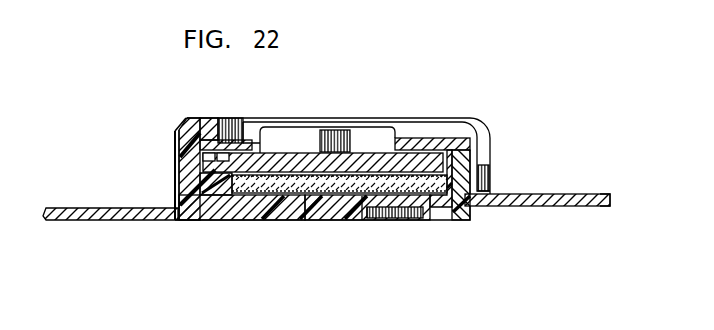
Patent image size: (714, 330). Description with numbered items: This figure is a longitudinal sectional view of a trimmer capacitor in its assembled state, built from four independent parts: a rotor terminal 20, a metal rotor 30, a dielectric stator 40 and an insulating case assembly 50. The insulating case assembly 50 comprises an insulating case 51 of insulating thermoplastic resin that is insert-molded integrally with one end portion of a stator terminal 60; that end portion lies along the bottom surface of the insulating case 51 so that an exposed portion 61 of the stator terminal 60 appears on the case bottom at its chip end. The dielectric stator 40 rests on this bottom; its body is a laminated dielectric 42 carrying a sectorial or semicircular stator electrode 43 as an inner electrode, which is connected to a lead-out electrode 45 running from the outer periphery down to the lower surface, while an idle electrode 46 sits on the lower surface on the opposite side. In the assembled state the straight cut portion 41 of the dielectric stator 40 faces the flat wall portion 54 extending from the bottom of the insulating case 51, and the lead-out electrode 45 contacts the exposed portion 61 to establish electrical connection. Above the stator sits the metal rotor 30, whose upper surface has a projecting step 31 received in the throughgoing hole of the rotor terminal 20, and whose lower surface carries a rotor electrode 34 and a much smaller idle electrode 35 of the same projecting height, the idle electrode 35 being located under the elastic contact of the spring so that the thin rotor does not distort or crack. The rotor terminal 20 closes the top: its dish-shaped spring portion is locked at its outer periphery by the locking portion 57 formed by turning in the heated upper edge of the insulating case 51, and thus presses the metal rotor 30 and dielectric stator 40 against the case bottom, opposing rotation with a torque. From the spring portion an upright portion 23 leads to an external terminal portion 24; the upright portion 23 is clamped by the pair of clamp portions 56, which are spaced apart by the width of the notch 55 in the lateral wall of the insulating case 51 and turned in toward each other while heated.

The rotor terminal 20 is at (531, 194).
The upright portion 23 is at (473, 171).
The terminal portion 24 is at (581, 194).
The metal rotor 30 is at (345, 137).
The projecting step 31 is at (302, 120).
The rotor electrode 34 is at (384, 152).
The idle electrode 35 is at (232, 120).
The dielectric stator 40 is at (330, 204).
The cut portion 41 is at (205, 163).
The dielectric 42 is at (300, 195).
The stator electrode 43 is at (392, 211).
The lead-out electrode 45 is at (420, 208).
The idle electrode 46 is at (272, 220).
The insulating case assembly 50 is at (177, 124).
The insulating case 51 is at (178, 143).
The flat wall portion 54 is at (200, 192).
The notch 55 is at (460, 126).
The clamp portions 56 is at (488, 160).
The locking portion 57 is at (212, 118).
The stator terminal 60 is at (73, 206).
The exposed portion 61 is at (370, 214).